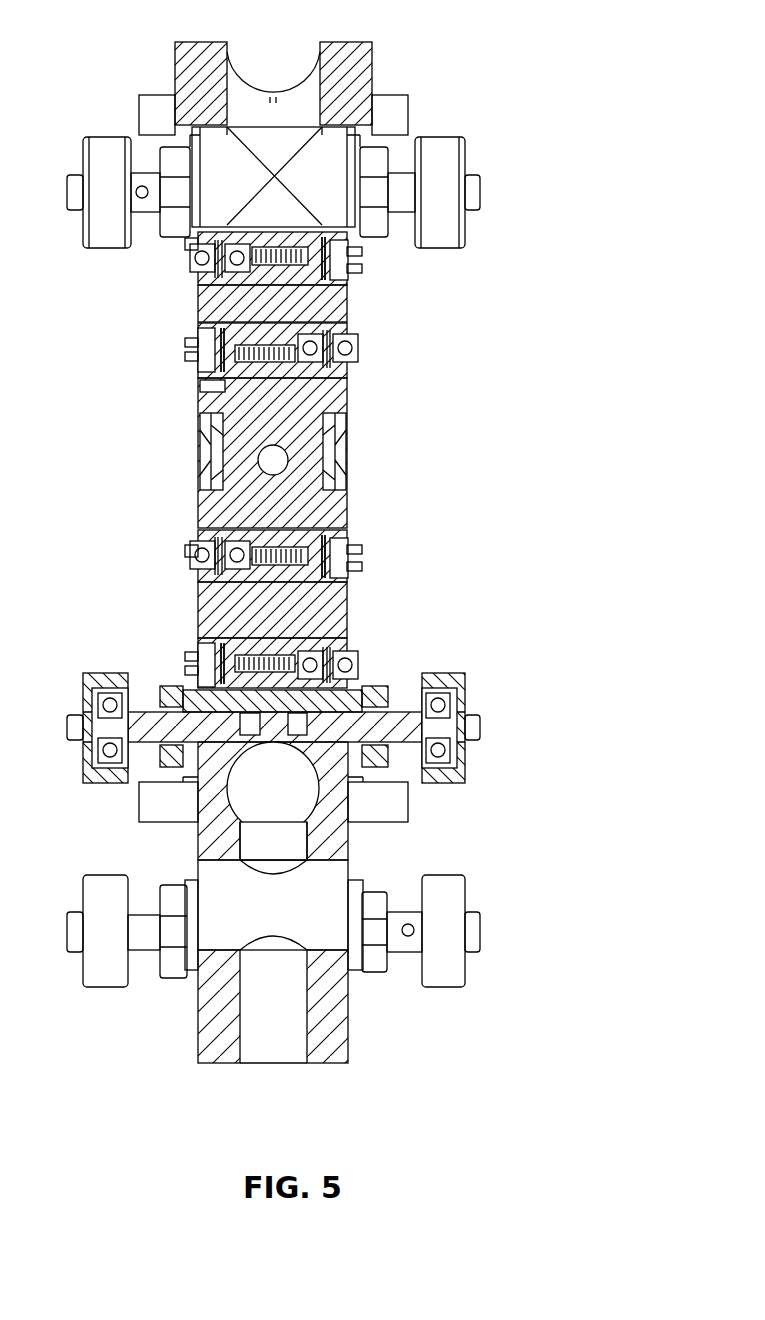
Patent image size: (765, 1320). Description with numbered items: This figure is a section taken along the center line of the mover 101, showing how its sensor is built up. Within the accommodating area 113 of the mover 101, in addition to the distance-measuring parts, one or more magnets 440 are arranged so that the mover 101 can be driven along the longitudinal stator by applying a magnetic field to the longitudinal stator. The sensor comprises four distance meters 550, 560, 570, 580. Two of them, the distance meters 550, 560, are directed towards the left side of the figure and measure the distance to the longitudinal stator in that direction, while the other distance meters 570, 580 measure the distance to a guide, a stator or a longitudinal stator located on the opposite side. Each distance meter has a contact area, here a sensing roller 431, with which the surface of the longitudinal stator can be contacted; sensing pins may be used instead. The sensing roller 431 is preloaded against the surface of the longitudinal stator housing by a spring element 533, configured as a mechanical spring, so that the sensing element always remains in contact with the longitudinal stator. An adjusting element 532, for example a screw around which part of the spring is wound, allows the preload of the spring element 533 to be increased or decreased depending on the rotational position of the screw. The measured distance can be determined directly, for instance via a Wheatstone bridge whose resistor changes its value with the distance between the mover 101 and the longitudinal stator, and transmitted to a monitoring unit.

The mover 101 is at (572, 1066).
The accommodating area 113 is at (150, 501).
The sensing roller 431 is at (360, 348).
The magnet 440 is at (271, 453).
The adjusting element 532 is at (198, 348).
The spring element 533 is at (200, 392).
The distance meter 550 is at (348, 270).
The distance meter 560 is at (348, 550).
The distance meter 570 is at (355, 656).
The distance meter 580 is at (198, 333).